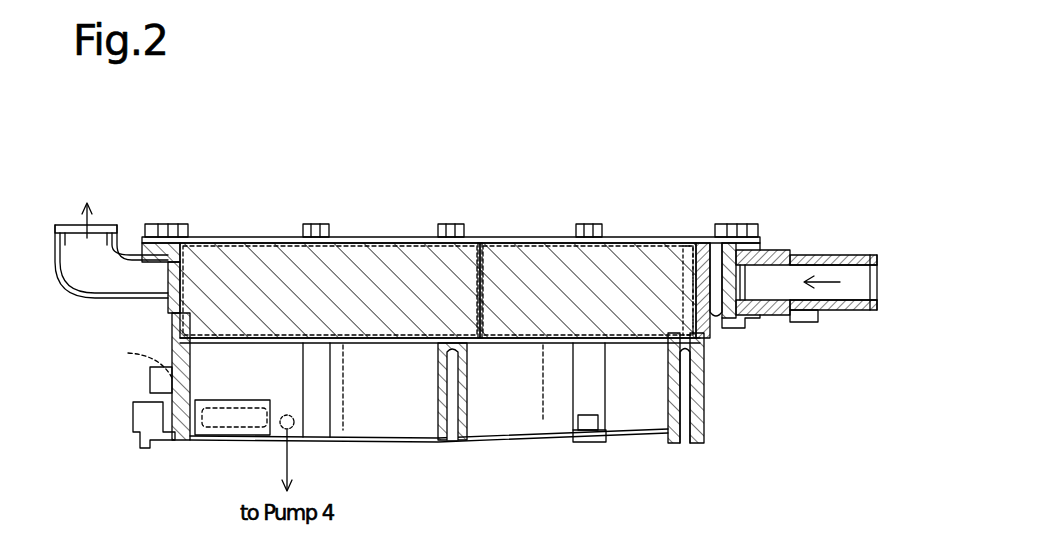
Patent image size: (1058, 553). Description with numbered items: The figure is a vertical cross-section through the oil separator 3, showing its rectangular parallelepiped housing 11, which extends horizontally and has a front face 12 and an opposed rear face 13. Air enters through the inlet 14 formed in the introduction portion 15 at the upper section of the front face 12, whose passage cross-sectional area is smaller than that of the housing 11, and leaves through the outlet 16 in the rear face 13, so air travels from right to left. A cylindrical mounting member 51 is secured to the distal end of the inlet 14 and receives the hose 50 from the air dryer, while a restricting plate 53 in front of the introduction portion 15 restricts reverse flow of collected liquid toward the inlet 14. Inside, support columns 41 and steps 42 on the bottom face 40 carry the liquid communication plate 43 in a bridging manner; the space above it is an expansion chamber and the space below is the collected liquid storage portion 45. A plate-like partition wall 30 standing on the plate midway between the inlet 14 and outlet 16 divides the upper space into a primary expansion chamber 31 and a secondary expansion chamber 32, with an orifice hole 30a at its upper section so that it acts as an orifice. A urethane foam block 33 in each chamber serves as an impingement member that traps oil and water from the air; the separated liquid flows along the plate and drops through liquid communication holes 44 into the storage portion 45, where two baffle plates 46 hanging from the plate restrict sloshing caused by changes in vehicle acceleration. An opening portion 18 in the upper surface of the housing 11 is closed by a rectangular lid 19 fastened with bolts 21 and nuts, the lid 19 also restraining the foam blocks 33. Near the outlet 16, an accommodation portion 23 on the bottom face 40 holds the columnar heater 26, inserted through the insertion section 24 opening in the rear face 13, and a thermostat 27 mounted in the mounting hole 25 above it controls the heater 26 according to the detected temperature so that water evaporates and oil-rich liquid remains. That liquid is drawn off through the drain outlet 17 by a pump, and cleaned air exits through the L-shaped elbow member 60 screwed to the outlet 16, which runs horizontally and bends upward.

The oil separator 3 is at (743, 138).
The housing 11 is at (628, 432).
The front face 12 is at (706, 385).
The rear face 13 is at (170, 333).
The inlet 14 is at (778, 228).
The introduction portion 15 is at (742, 328).
The outlet 16 is at (131, 200).
The drain outlet 17 is at (292, 444).
The opening portion 18 is at (690, 240).
The lid 19 is at (645, 238).
The bolt 21 is at (171, 224).
The accommodation portion 23 is at (244, 440).
The insertion section 24 is at (232, 405).
The mounting hole 25 is at (133, 357).
The heater 26 is at (212, 440).
The thermostat 27 is at (149, 380).
The partition wall 30 is at (481, 243).
The orifice hole 30a is at (485, 272).
The primary expansion chamber 31 is at (575, 300).
The secondary expansion chamber 32 is at (312, 302).
The urethane foam block 33 is at (408, 237).
The bottom face 40 is at (408, 438).
The support column 41 is at (302, 392).
The step 42 is at (222, 343).
The liquid communication plate 43 is at (403, 336).
The liquid communication hole 44 is at (436, 392).
The collected liquid storage portion 45 is at (530, 374).
The baffle plate 46 is at (346, 402).
The hose 50 is at (862, 255).
The mounting member 51 is at (792, 322).
The restricting plate 53 is at (698, 270).
The elbow member 60 is at (75, 296).